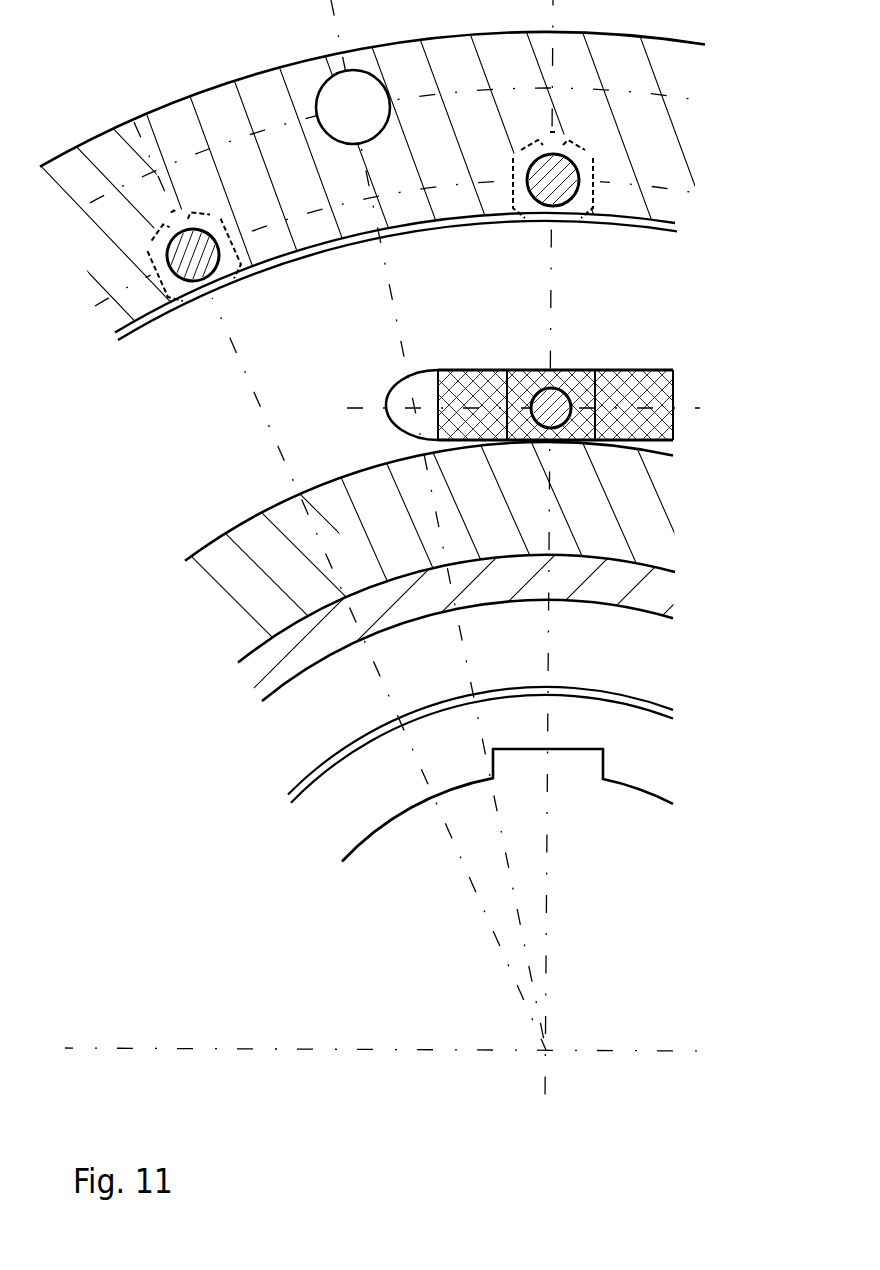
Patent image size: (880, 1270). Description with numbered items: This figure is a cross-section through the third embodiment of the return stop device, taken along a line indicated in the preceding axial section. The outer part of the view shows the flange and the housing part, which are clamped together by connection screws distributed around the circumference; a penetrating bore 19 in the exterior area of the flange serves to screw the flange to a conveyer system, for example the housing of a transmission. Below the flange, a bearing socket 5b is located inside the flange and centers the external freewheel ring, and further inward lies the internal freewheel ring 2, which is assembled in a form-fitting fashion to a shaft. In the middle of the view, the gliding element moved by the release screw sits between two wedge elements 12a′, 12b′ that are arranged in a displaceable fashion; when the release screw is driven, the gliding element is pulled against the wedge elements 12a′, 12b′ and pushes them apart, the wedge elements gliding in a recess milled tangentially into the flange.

The penetrating bore 19 is at (353, 144).
The wedge element 12b′ is at (468, 368).
The wedge element 12a′ is at (660, 368).
The bearing socket 5b is at (652, 590).
The internal freewheel ring 2 is at (643, 752).